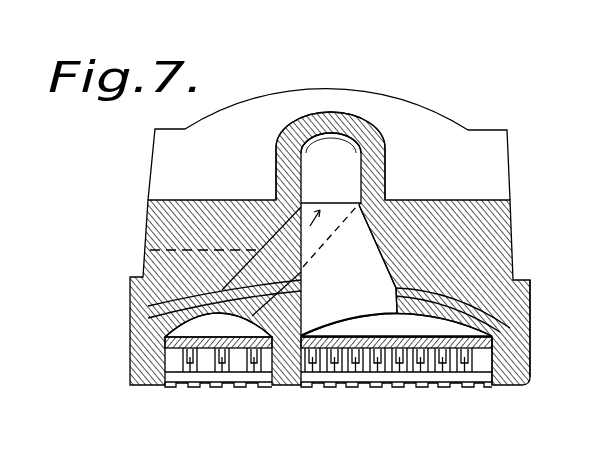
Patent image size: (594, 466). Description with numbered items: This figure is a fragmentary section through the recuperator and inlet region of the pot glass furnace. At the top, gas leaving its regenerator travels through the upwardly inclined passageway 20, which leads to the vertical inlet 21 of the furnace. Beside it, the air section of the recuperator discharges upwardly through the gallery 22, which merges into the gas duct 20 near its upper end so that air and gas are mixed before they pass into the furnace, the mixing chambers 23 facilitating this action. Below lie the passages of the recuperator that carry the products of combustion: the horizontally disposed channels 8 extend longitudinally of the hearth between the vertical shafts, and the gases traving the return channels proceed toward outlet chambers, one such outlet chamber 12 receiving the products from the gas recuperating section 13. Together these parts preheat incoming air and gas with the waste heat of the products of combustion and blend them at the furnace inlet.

The upwardly inclined passageway 20 is at (140, 243).
The vertical inlet 21 is at (349, 150).
The gallery 22 is at (353, 316).
The mixing chambers 23 is at (331, 168).
The gas recuperating section 13 is at (202, 334).
The outlet chamber 12 is at (458, 333).
The horizontally disposed channels 8 is at (253, 370).